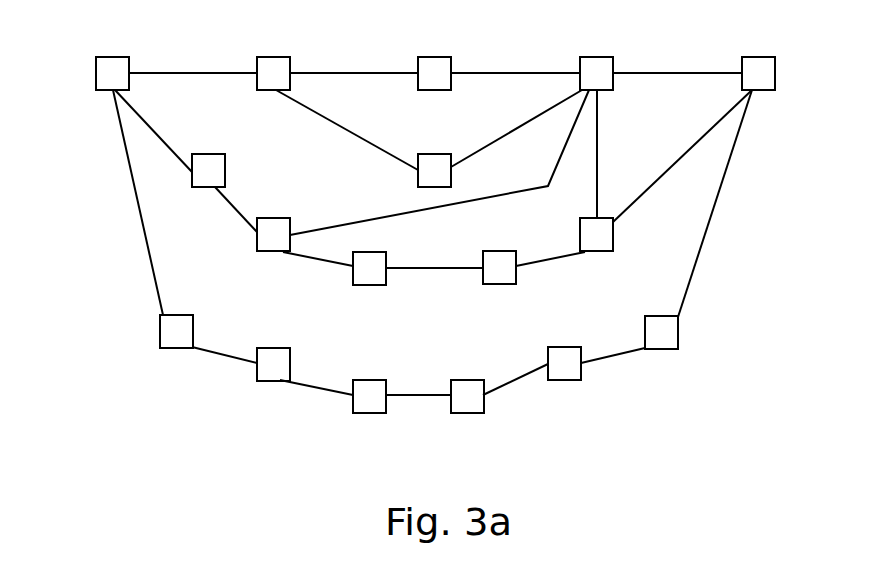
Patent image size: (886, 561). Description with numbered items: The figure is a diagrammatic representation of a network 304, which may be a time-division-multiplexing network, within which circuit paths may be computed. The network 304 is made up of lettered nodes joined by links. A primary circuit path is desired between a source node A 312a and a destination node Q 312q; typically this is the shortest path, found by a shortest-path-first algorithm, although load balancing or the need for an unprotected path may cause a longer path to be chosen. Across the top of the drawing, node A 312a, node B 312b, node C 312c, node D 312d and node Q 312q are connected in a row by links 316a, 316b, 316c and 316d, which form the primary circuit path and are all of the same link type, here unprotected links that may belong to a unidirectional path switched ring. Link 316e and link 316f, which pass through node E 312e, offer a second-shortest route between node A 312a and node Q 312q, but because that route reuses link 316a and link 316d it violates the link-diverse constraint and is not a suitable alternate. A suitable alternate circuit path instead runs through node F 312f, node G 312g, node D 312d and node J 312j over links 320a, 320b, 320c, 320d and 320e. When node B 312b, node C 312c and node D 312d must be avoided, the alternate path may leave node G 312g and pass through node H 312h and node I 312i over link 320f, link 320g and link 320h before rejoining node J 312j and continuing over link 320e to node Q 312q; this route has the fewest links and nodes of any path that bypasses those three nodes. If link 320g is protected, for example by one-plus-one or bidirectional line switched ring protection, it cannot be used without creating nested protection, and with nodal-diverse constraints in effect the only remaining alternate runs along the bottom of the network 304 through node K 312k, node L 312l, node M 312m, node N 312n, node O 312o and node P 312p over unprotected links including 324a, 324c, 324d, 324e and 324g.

The network 304 is at (115, 424).
The node A 312a is at (113, 57).
The node B 312b is at (272, 57).
The node C 312c is at (431, 57).
The node D 312d is at (593, 57).
The node E 312e is at (432, 154).
The node F 312f is at (206, 154).
The node G 312g is at (272, 218).
The node H 312h is at (368, 252).
The node I 312i is at (498, 251).
The node J 312j is at (598, 255).
The node K 312k is at (177, 315).
The node L 312l is at (275, 348).
The node M 312m is at (369, 380).
The node N 312n is at (463, 380).
The node O 312o is at (563, 347).
The node P 312p is at (670, 349).
The node Q 312q is at (752, 57).
The link 316a is at (178, 73).
The link 316b is at (333, 73).
The link 316c is at (485, 73).
The link 316d is at (642, 73).
The link 316e is at (342, 120).
The link 316f is at (492, 172).
The link 320a is at (150, 126).
The link 320b is at (216, 197).
The link 320c is at (360, 221).
The link 320d is at (597, 125).
The link 320e is at (648, 228).
The link 320f is at (292, 256).
The link 320g is at (412, 268).
The link 320h is at (537, 263).
The link 324a is at (130, 189).
The link 324c is at (310, 386).
The link 324d is at (415, 396).
The link 324e is at (512, 382).
The link 324g is at (702, 247).